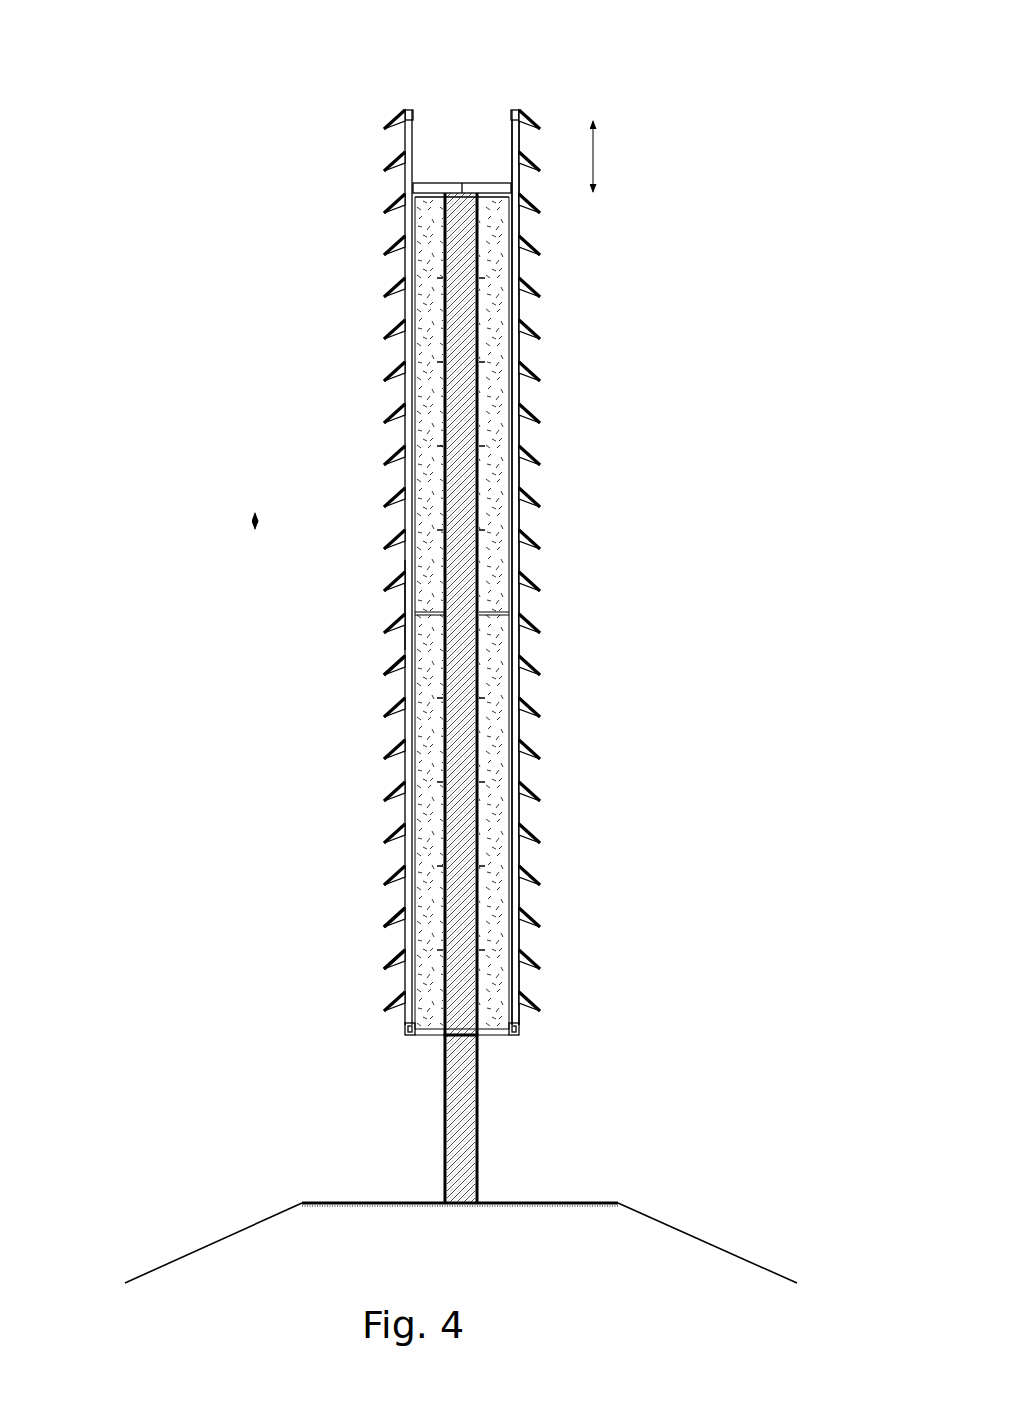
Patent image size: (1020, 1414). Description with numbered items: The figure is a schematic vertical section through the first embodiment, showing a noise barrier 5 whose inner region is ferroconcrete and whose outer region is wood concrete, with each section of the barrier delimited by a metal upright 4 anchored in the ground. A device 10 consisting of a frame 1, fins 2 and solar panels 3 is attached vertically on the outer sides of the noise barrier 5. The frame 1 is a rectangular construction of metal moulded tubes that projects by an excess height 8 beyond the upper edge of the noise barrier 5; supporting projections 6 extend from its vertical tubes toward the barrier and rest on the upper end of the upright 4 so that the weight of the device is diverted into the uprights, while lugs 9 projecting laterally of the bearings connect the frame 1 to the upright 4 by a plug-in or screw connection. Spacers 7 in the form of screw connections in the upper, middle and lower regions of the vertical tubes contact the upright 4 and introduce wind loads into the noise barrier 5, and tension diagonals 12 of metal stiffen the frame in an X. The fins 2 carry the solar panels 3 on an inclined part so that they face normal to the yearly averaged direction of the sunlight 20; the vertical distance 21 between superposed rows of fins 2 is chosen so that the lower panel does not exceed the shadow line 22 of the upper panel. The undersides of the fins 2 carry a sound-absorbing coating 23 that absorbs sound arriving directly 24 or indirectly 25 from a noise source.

The frame 1 is at (506, 103).
The fins 2 is at (533, 288).
The solar panels 3 is at (397, 327).
The upright 4 is at (480, 522).
The noise barrier 5 is at (465, 563).
The supporting projections 6 is at (453, 185).
The spacers 7 is at (483, 615).
The excess height 8 is at (603, 156).
The lugs 9 is at (486, 208).
The device 10 is at (420, 117).
The tension diagonals 12 is at (512, 351).
The direction of the sunlight 20 is at (188, 237).
The vertical distance 21 is at (237, 520).
The shadow line 22 is at (397, 605).
The sound-absorbing coating 23 is at (398, 665).
The directly incoming sound 24 is at (427, 803).
The indirectly incoming sound 25 is at (403, 913).